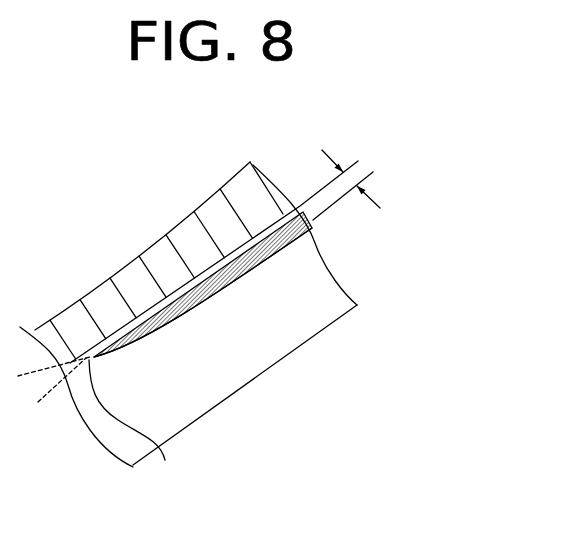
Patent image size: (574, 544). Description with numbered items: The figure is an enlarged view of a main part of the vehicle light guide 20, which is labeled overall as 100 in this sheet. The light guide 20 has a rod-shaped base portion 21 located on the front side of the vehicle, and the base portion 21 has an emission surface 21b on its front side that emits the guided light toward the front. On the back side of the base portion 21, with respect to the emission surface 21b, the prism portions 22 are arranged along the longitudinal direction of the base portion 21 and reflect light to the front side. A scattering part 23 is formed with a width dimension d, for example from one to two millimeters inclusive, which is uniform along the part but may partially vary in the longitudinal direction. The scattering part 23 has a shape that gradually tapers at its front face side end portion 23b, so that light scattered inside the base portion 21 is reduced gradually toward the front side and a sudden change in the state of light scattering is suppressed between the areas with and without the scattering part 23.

The heat dissipation structure 100 is at (76, 142).
The vehicle light guide 20 is at (216, 459).
The base portion 21 is at (231, 370).
The emission surface 21b is at (300, 346).
The prism portions 22 is at (212, 216).
The scattering part 23 is at (209, 267).
The front face side end portion 23b is at (165, 460).
The width dimension d is at (349, 180).